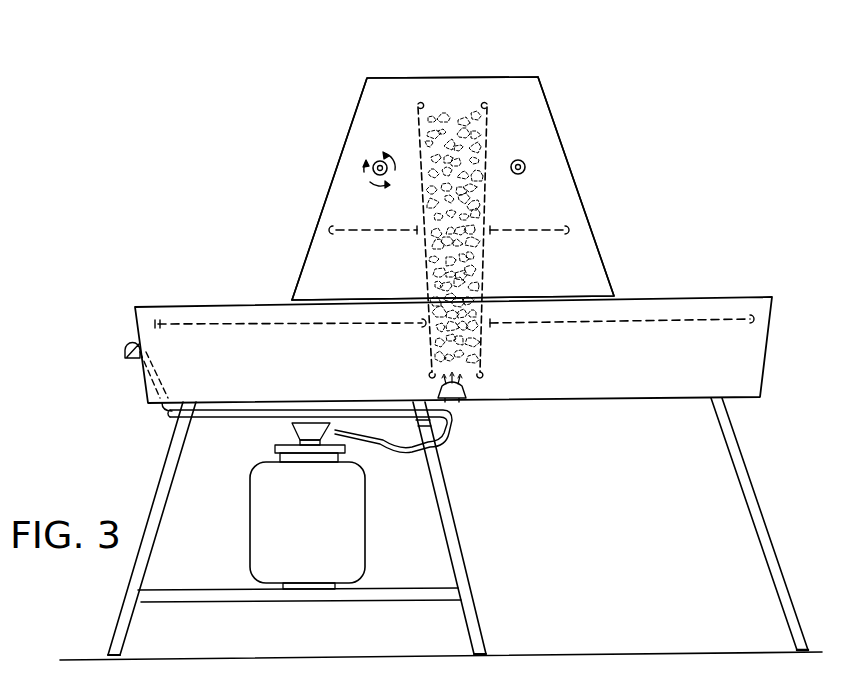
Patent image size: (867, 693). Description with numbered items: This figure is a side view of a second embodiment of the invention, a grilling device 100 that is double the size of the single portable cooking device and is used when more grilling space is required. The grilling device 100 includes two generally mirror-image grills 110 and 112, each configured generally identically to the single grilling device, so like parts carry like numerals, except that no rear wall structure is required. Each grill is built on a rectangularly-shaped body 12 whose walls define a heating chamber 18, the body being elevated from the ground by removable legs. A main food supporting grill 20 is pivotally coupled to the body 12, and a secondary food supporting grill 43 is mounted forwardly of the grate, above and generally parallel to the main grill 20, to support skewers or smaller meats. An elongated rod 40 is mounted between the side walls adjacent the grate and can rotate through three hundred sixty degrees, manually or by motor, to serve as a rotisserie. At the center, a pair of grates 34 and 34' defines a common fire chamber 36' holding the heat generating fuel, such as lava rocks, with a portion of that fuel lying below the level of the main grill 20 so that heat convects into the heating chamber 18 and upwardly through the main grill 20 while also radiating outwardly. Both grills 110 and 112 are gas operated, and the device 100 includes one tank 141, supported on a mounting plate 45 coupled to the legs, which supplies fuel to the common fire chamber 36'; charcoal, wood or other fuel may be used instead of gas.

The grilling device 100 is at (655, 61).
The grill 110 is at (291, 280).
The grill 112 is at (618, 267).
The body 12 is at (226, 405).
The heating chamber 18 is at (176, 372).
The main food supporting grill 20 is at (177, 320).
The secondary food supporting grill 43 is at (355, 228).
The elongated rod 40 is at (378, 160).
The grate 34 is at (405, 204).
The grate 34' is at (545, 221).
The common fire chamber 36' is at (470, 197).
The tank 141 is at (363, 527).
The mounting plate 45 is at (390, 603).